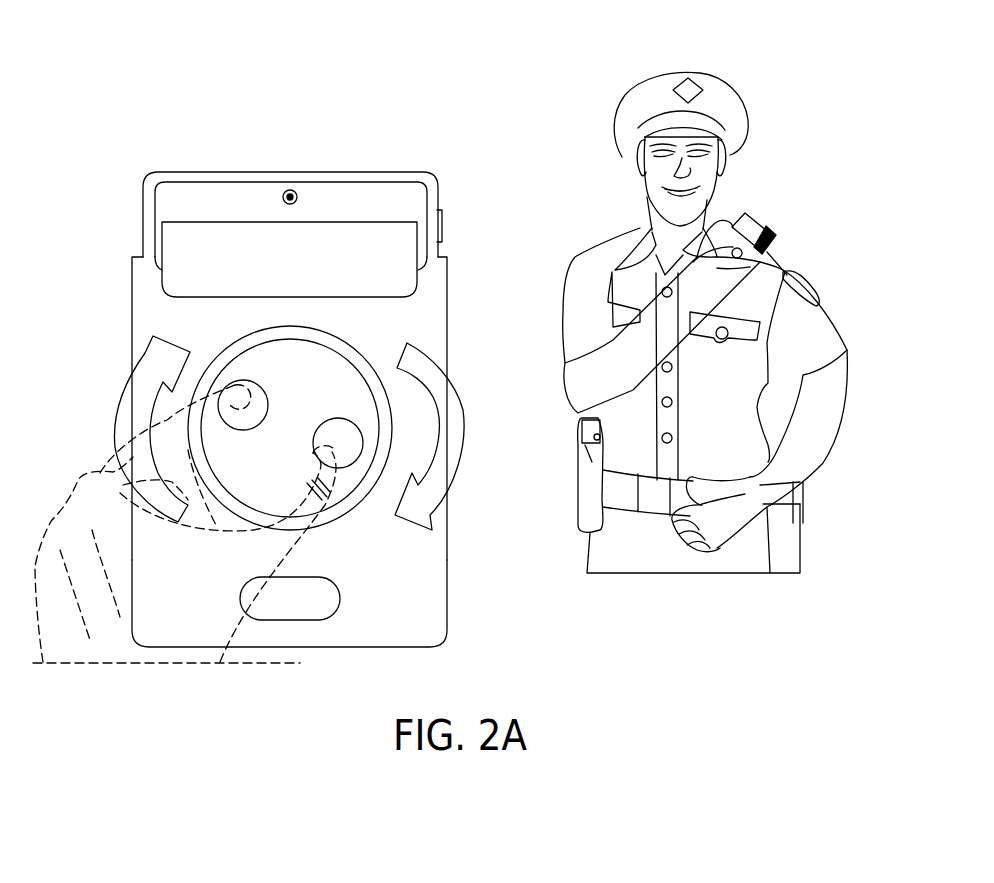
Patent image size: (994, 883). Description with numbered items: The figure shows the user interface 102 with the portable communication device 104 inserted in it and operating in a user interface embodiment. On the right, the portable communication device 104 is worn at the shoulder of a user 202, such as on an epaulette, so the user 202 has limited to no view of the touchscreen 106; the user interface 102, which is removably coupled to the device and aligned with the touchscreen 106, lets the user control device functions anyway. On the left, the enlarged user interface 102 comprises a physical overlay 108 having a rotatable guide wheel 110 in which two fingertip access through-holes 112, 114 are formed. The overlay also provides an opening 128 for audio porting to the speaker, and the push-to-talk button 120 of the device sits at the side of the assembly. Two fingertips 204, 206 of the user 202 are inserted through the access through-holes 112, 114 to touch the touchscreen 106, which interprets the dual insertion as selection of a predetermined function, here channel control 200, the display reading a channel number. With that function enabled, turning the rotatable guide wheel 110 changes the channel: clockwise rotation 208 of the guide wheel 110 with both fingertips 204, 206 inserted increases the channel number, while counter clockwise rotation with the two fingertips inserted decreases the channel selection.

The channel control 200 is at (120, 55).
The user interface 102 is at (448, 328).
The portable communication device 104 is at (290, 170).
The touchscreen 106 is at (173, 248).
The physical overlay 108 is at (427, 573).
The rotatable guide wheel 110 is at (345, 345).
The access through-hole 112 is at (250, 432).
The access through-hole 114 is at (333, 417).
The push-to-talk (PTT) button 120 is at (443, 225).
The opening 128 is at (342, 598).
The user 202 is at (783, 260).
The fingertip 204 is at (167, 445).
The fingertip 206 is at (307, 537).
The clockwise rotation 208 is at (120, 400).